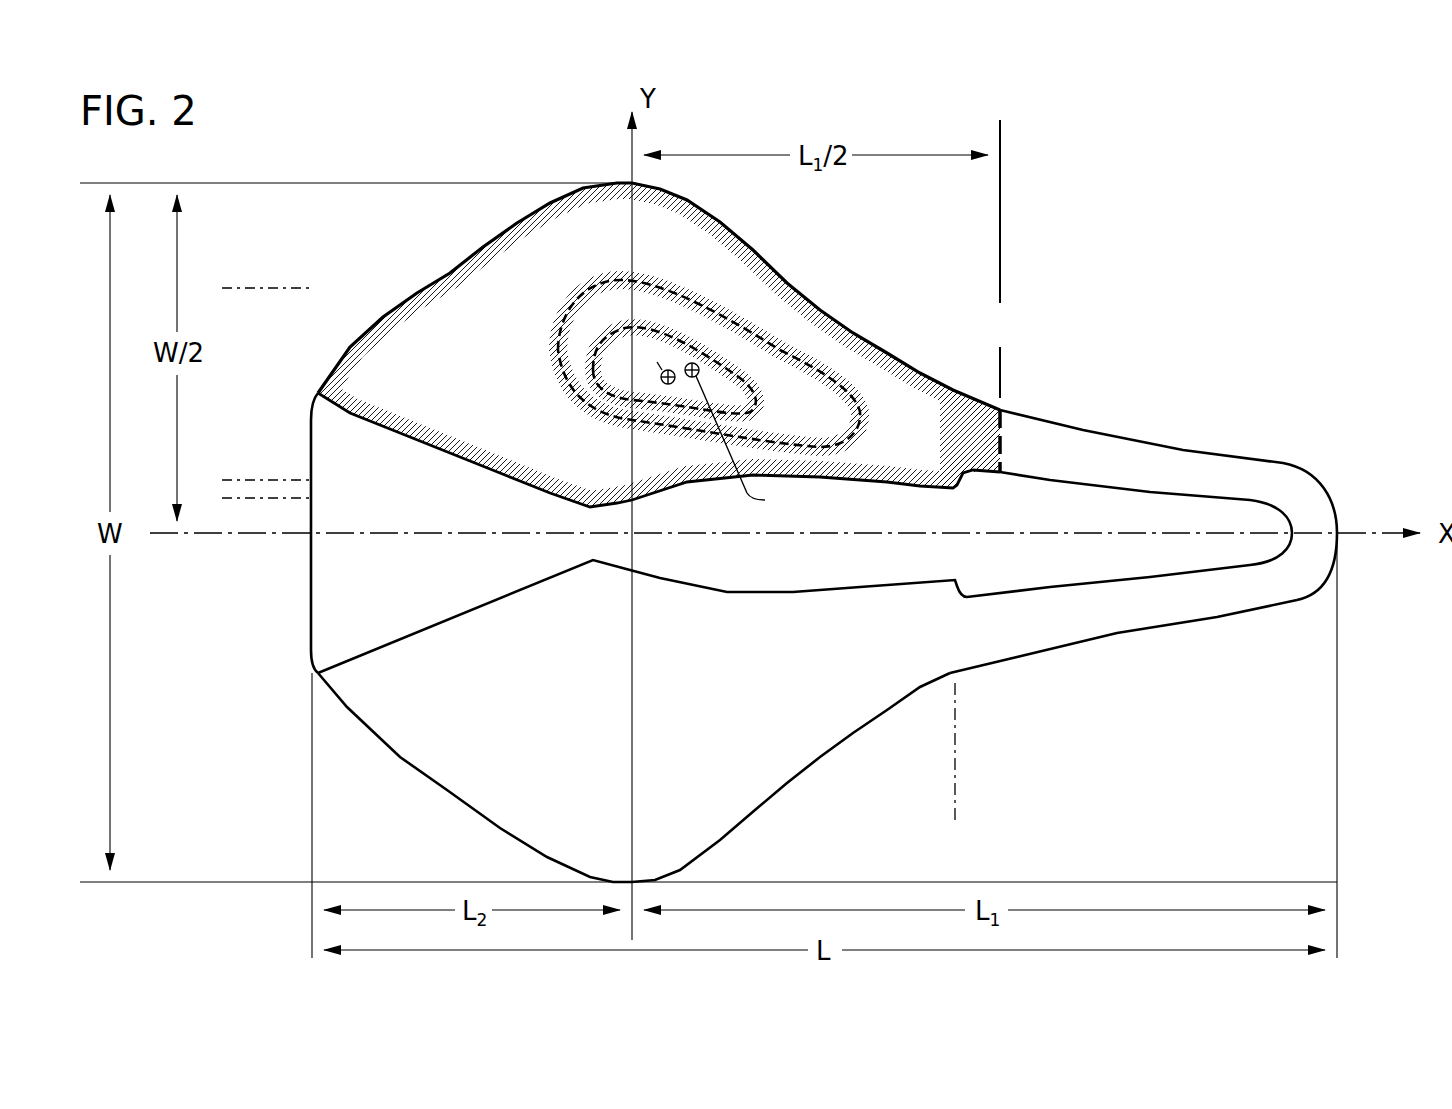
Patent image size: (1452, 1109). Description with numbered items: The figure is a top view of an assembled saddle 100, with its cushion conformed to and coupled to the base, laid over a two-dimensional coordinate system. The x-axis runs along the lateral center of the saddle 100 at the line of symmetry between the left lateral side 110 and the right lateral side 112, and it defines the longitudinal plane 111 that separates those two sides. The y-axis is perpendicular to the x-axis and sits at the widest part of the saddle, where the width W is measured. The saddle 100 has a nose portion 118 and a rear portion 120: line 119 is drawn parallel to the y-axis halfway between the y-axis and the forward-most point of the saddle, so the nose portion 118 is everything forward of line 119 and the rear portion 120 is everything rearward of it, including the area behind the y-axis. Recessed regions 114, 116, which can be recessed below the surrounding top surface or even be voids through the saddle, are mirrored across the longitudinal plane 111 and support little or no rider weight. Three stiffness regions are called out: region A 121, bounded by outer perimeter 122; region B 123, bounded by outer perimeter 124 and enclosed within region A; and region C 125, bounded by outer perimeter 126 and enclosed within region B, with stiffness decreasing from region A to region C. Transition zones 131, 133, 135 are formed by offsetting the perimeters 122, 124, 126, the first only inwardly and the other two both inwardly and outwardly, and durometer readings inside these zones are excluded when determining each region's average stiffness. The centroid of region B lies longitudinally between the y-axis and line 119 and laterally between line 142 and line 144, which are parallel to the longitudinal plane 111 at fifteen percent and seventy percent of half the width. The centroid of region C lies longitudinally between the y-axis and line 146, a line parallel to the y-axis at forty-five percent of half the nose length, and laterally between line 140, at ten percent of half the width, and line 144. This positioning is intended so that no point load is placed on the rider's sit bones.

The saddle 100 is at (1176, 230).
The left lateral side 110 is at (397, 373).
The longitudinal plane 111 is at (1363, 533).
The right lateral side 112 is at (455, 787).
The recessed region 114 is at (1083, 570).
The recessed region 116 is at (312, 593).
The nose portion 118 is at (1208, 468).
The line 119 is at (1003, 440).
The rear portion 120 is at (580, 245).
The region A 121 is at (902, 420).
The outer perimeter of region A 122 is at (710, 211).
The region B 123 is at (807, 407).
The outer perimeter of region B 124 is at (652, 276).
The region C 125 is at (712, 390).
The outer perimeter of region C 126 is at (597, 378).
The transition zone 131 is at (448, 288).
The transition zone 133 is at (557, 345).
The transition zone 135 is at (597, 353).
The line 140 is at (260, 498).
The line 142 is at (260, 480).
The line 144 is at (260, 288).
The line 146 is at (956, 772).